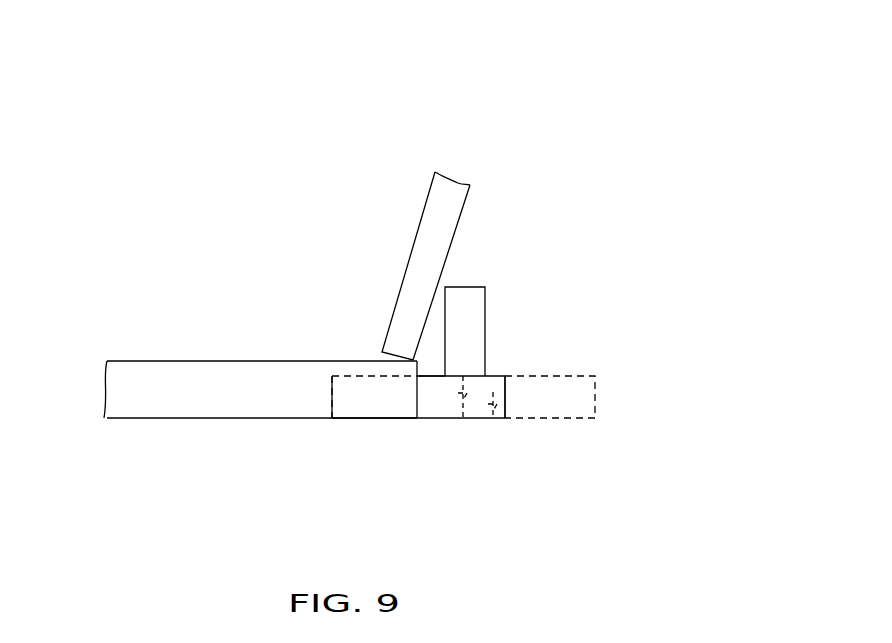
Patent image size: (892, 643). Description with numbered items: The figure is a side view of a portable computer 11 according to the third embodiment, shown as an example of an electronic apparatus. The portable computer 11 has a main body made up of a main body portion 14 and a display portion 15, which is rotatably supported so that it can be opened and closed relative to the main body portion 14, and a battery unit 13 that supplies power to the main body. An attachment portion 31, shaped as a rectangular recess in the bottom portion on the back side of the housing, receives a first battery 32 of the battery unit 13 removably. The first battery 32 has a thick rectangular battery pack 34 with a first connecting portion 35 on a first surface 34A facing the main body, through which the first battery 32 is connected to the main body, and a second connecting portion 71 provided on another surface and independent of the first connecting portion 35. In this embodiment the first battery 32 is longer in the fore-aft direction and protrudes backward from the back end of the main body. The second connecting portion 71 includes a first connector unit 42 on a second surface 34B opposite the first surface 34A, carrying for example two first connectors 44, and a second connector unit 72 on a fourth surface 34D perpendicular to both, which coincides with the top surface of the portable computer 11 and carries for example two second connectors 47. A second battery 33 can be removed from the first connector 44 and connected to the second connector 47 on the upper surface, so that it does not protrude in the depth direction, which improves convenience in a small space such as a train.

The portable computer 11 is at (287, 215).
The battery unit 13 is at (542, 450).
The main body portion 14 is at (165, 419).
The display portion 15 is at (460, 202).
The attachment portion 31 is at (316, 401).
The first battery 32 is at (423, 419).
The second battery 33 is at (472, 287).
The battery pack 34 is at (442, 419).
The first surface 34A is at (328, 396).
The second surface 34B is at (505, 386).
The fourth surface 34D is at (433, 376).
The first connecting portion 35 is at (348, 424).
The first connector unit 42 is at (486, 432).
The first connector 44 is at (493, 419).
The second connector 47 is at (463, 419).
The second connecting portion 71 is at (529, 403).
The second connector unit 72 is at (450, 342).